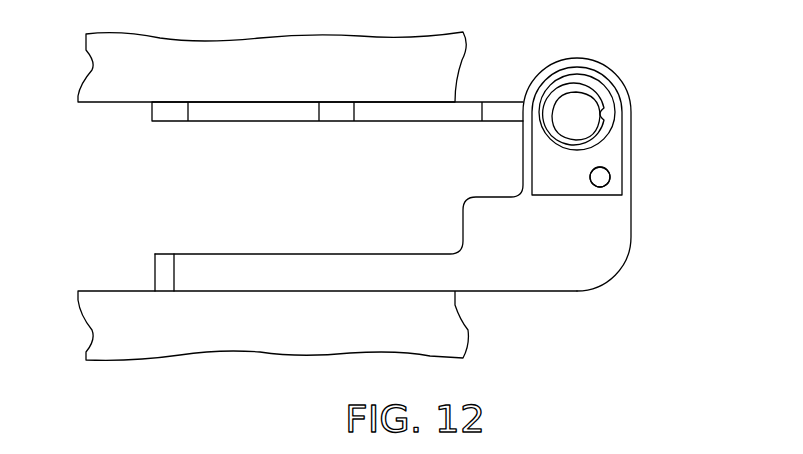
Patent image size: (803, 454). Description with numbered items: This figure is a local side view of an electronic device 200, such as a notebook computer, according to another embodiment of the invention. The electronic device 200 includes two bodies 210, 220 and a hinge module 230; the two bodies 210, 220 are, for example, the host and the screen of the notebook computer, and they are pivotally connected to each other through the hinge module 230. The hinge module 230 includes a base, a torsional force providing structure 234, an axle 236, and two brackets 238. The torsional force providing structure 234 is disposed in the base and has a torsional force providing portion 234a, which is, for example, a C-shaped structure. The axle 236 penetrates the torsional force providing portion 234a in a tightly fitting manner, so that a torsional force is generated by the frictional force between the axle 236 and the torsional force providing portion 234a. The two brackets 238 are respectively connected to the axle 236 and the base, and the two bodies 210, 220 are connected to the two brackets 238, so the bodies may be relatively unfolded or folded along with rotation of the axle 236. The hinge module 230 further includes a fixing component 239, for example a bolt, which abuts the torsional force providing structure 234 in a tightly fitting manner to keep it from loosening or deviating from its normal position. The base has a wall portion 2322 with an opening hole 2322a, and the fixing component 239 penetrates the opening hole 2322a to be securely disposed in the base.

The electronic device 200 is at (660, 339).
The body 210 is at (100, 332).
The body 220 is at (95, 67).
The hinge module 230 is at (652, 184).
The wall portion 2322 is at (570, 183).
The opening hole 2322a is at (610, 168).
The torsional force providing structure 234 is at (593, 80).
The torsional force providing portion 234a is at (586, 90).
The axle 236 is at (572, 108).
The bracket 238 is at (382, 117).
The fixing component 239 is at (602, 178).